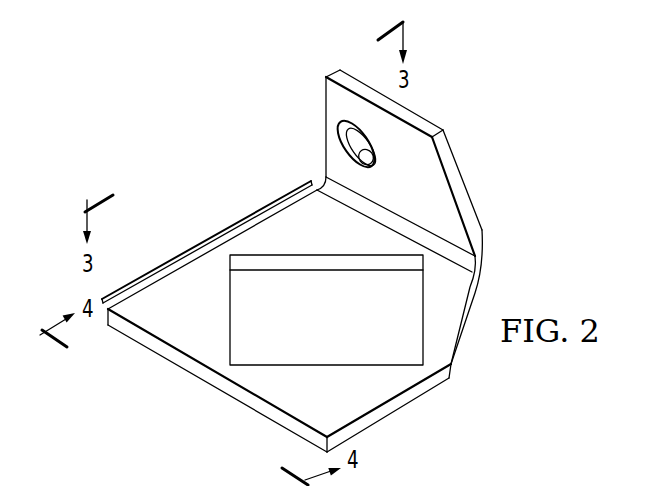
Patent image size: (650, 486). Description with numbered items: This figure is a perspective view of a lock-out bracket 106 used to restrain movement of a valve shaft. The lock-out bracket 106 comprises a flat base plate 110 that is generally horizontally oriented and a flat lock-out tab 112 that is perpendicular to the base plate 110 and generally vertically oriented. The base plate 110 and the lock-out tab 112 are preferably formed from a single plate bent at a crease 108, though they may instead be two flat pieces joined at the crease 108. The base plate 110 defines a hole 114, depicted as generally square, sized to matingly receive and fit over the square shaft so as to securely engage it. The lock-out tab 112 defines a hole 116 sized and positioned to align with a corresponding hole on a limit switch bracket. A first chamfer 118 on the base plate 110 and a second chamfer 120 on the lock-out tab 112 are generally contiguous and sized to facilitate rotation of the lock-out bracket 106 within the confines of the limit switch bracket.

The lock-out bracket 106 is at (208, 190).
The crease 108 is at (362, 203).
The base plate 110 is at (198, 238).
The lock-out tab 112 is at (318, 170).
The hole 114 is at (230, 300).
The hole 116 is at (359, 161).
The first chamfer 118 is at (457, 358).
The second chamfer 120 is at (458, 177).